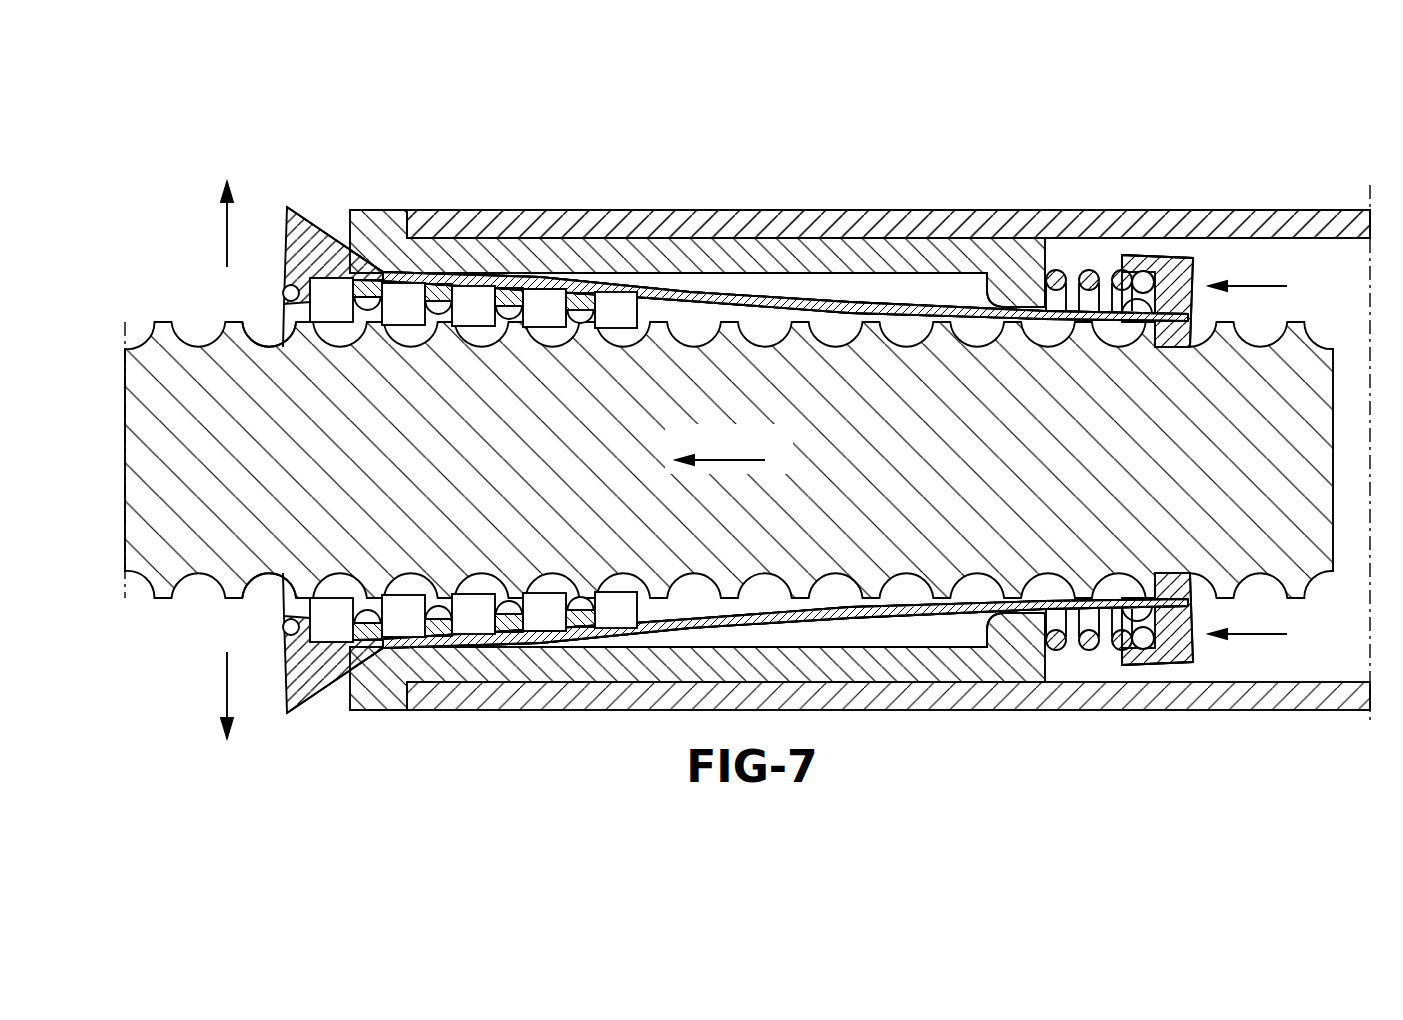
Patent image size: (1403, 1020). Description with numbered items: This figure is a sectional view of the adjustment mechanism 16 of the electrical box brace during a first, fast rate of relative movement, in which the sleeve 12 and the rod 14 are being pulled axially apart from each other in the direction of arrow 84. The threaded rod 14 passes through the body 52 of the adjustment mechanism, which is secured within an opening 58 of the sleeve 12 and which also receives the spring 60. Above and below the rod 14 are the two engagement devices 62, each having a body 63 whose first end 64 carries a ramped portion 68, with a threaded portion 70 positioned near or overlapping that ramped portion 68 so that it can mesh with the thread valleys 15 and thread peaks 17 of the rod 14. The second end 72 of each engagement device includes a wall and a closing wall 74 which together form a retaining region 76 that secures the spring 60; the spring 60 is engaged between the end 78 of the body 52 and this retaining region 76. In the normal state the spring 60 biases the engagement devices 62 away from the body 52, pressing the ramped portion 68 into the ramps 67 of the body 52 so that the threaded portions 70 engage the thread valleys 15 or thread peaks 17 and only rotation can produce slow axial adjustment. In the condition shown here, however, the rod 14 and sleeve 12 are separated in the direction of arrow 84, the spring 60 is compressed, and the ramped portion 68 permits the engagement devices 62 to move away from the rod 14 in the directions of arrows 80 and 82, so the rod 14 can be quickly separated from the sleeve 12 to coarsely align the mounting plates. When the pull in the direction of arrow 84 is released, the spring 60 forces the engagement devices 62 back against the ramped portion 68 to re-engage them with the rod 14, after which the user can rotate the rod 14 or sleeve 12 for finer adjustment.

The sleeve 12 is at (622, 209).
The rod 14 is at (160, 600).
The thread valleys 15 is at (322, 333).
The adjustment mechanism 16 is at (1186, 125).
The thread peaks 17 is at (292, 345).
The body 52 is at (690, 246).
The opening 58 is at (1333, 277).
The spring 60 is at (1052, 262).
The engagement device 62 is at (913, 303).
The body 63 is at (915, 288).
The first end 64 is at (283, 233).
The ramps 67 is at (352, 266).
The ramped portion 68 is at (327, 236).
The threaded portion 70 is at (297, 292).
The second end 72 is at (1195, 270).
The closing wall 74 is at (1138, 262).
The retaining region 76 is at (1127, 320).
The end 78 is at (1012, 296).
The arrow 80 is at (227, 232).
The arrow 82 is at (227, 690).
The arrow 84 is at (1256, 286).